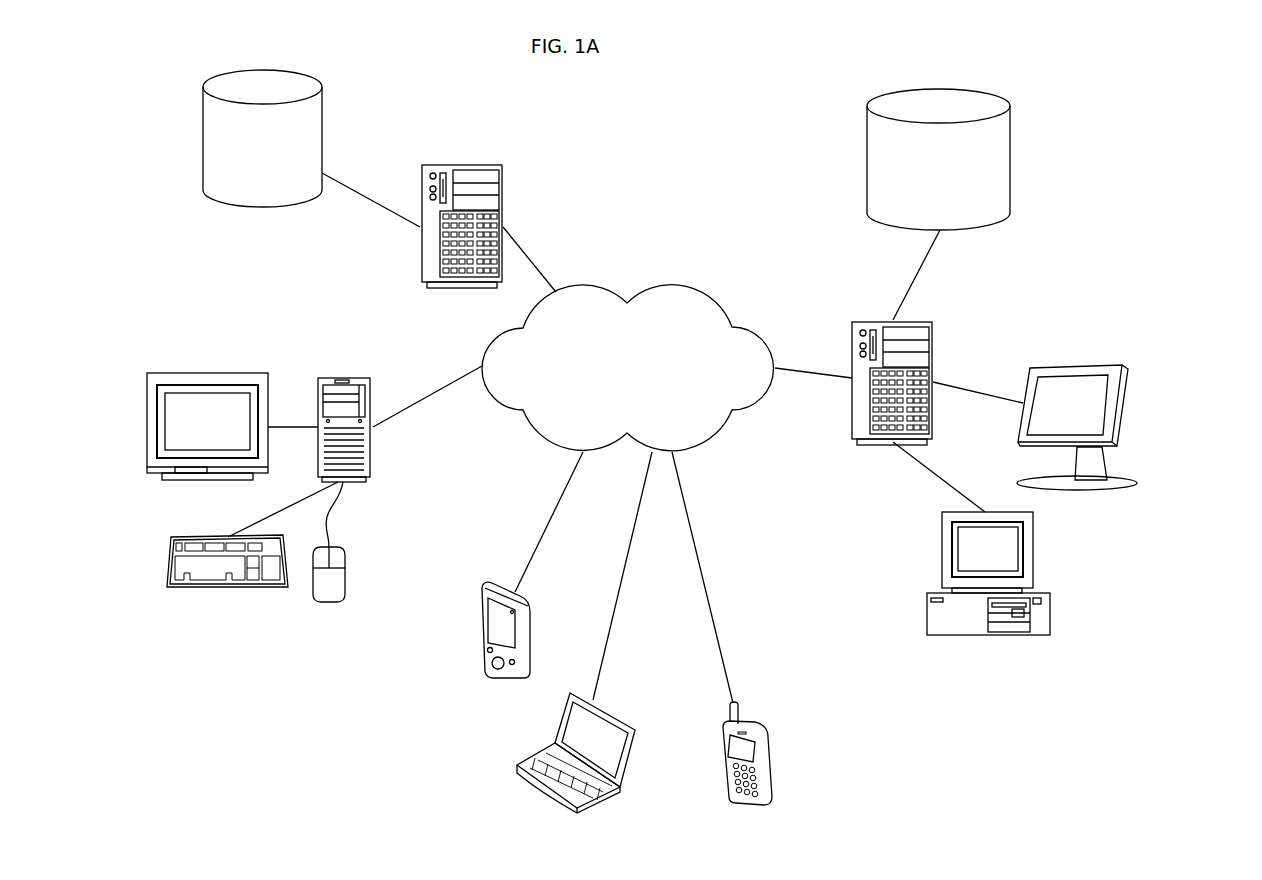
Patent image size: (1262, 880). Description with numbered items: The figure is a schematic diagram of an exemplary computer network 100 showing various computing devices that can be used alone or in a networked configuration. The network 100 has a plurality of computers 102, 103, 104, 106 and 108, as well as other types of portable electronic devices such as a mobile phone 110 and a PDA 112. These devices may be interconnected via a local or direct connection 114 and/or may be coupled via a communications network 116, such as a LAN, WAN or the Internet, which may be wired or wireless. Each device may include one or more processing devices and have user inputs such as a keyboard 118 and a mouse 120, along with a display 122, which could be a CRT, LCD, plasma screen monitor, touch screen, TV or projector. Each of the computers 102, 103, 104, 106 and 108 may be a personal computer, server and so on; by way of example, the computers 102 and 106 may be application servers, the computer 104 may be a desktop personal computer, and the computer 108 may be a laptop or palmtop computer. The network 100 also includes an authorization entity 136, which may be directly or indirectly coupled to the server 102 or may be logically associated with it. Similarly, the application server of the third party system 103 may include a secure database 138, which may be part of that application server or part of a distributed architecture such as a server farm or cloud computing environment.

The computer network 100 is at (557, 84).
The computer 102 is at (370, 382).
The computer 103 is at (505, 190).
The computer 104 is at (841, 330).
The computer 106 is at (927, 598).
The computer 108 is at (520, 760).
The mobile phone 110 is at (777, 760).
The PDA 112 is at (480, 653).
The local or direct connection 114 is at (927, 470).
The communications network 116 is at (613, 381).
The keyboard 118 is at (228, 588).
The mouse 120 is at (343, 567).
The display 122 is at (202, 373).
The authorization entity 136 is at (1012, 120).
The secure database 138 is at (323, 143).